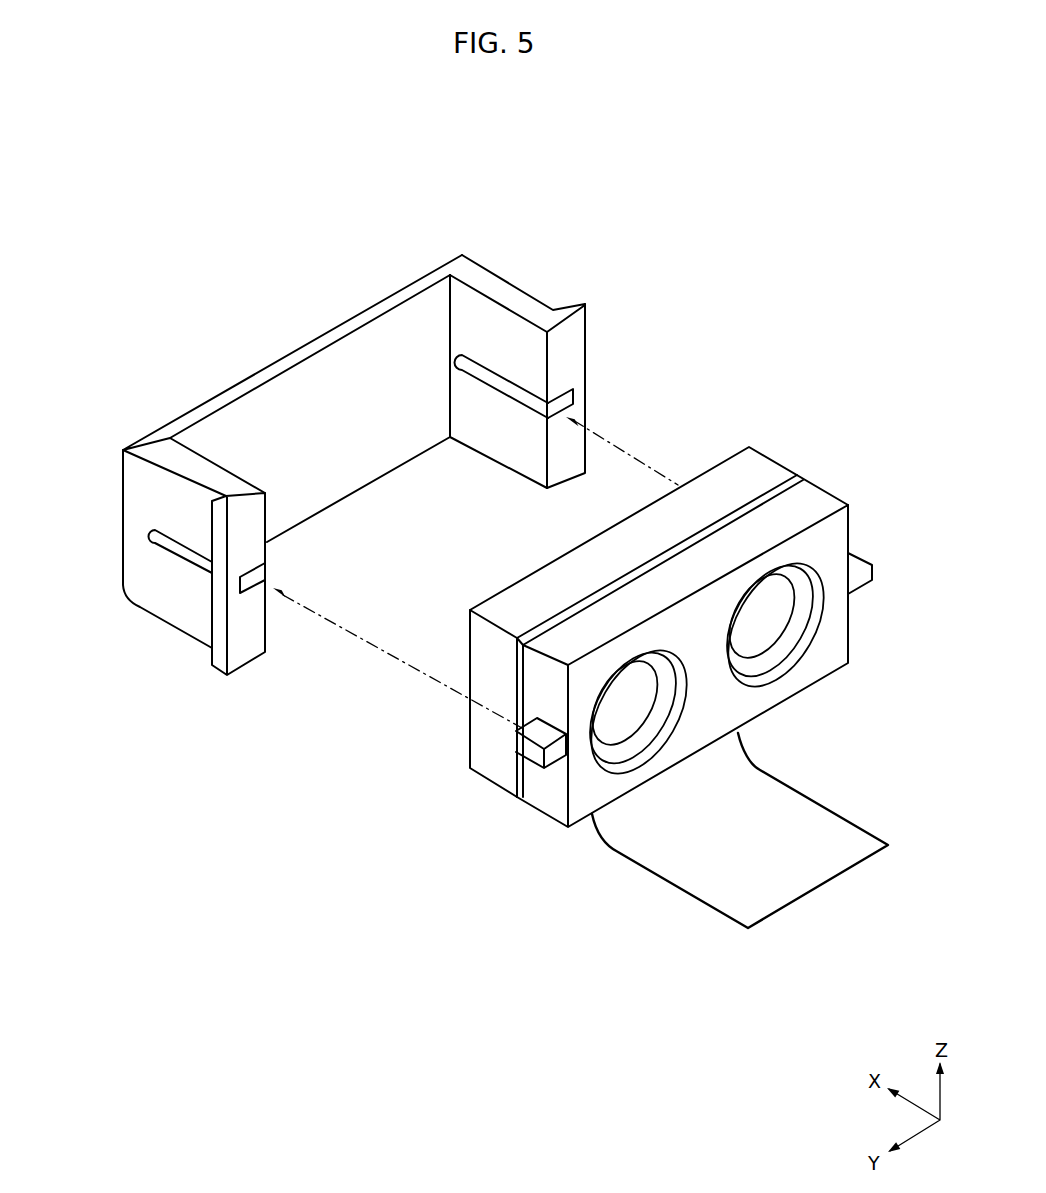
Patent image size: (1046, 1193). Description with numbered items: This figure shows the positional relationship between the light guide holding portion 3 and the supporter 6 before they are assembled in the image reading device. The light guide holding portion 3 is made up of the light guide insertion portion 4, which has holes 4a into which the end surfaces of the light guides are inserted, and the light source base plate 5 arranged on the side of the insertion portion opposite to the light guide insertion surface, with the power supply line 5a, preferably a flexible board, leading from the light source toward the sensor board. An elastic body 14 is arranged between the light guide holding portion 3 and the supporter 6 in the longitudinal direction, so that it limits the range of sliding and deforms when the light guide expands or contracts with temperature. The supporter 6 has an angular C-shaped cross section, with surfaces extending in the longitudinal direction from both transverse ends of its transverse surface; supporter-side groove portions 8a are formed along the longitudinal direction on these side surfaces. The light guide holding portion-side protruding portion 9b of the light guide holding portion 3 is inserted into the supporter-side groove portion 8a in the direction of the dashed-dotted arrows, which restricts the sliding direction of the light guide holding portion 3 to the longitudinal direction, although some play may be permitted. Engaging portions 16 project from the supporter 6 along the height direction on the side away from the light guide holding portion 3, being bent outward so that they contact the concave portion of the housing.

The light guide holding portion 3 is at (808, 427).
The light guide insertion portion 4 is at (682, 583).
The holes 4a is at (803, 633).
The light source base plate 5 is at (523, 643).
The power supply line 5a is at (743, 833).
The supporter 6 is at (338, 424).
The supporter-side groove portion 8a is at (558, 400).
The light guide holding portion-side protruding portion 9b is at (858, 559).
The elastic body 14 is at (548, 592).
The engaging portions 16 is at (568, 312).